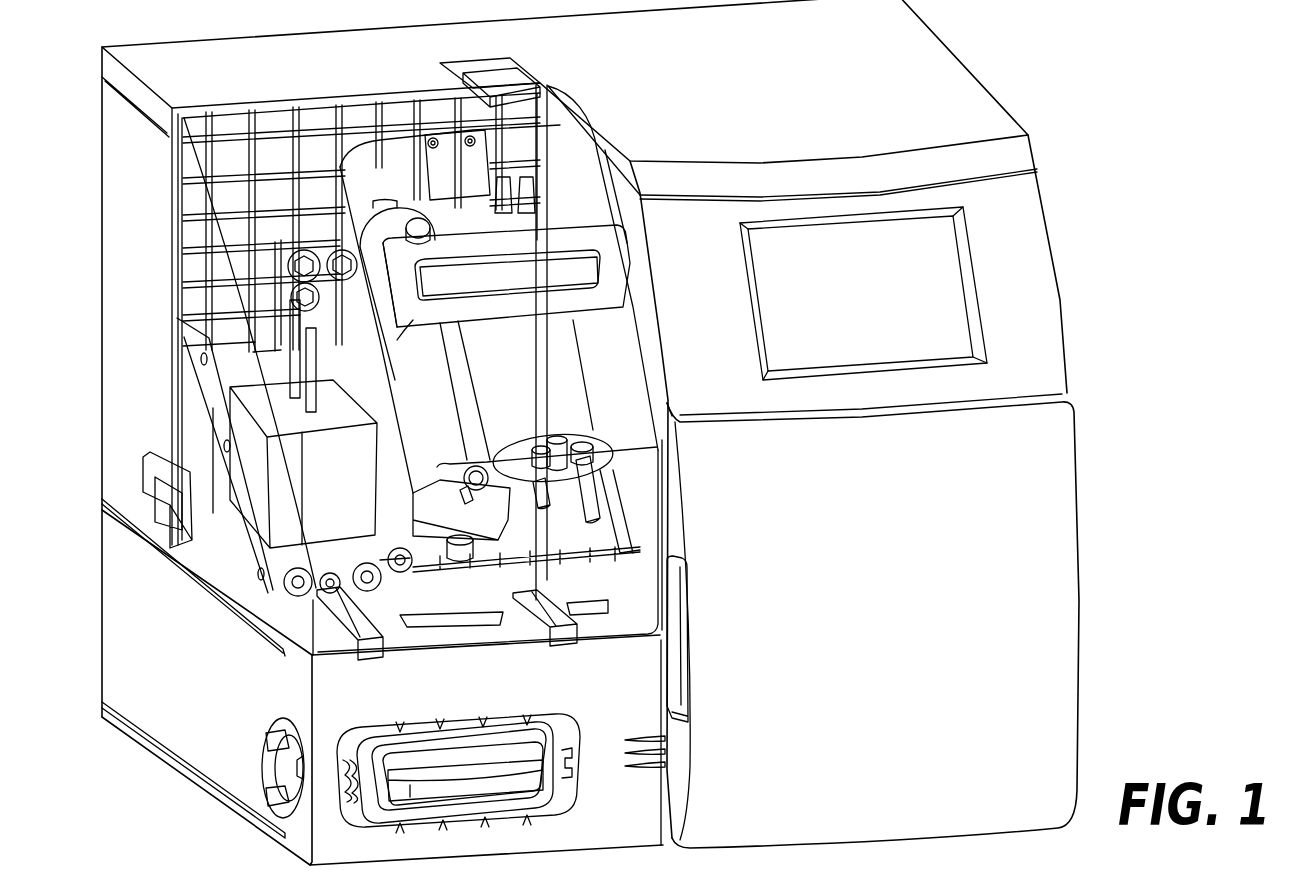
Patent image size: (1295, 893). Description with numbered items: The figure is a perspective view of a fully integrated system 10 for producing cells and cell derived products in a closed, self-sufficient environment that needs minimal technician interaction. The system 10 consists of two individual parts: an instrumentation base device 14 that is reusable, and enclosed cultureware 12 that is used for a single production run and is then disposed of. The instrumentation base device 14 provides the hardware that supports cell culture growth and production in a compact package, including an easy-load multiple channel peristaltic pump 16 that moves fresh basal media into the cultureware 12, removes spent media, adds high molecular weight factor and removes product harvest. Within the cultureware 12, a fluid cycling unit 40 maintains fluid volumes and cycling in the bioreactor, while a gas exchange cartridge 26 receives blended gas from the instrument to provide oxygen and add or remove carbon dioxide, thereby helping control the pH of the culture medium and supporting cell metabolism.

The fully integrated system 10 is at (1118, 445).
The enclosed cultureware 12 is at (287, 323).
The instrumentation base device 14 is at (1019, 216).
The easy-load multiple channel peristaltic pump 16 is at (331, 778).
The gas exchange cartridge 26 is at (557, 352).
The fluid cycling unit 40 is at (258, 487).